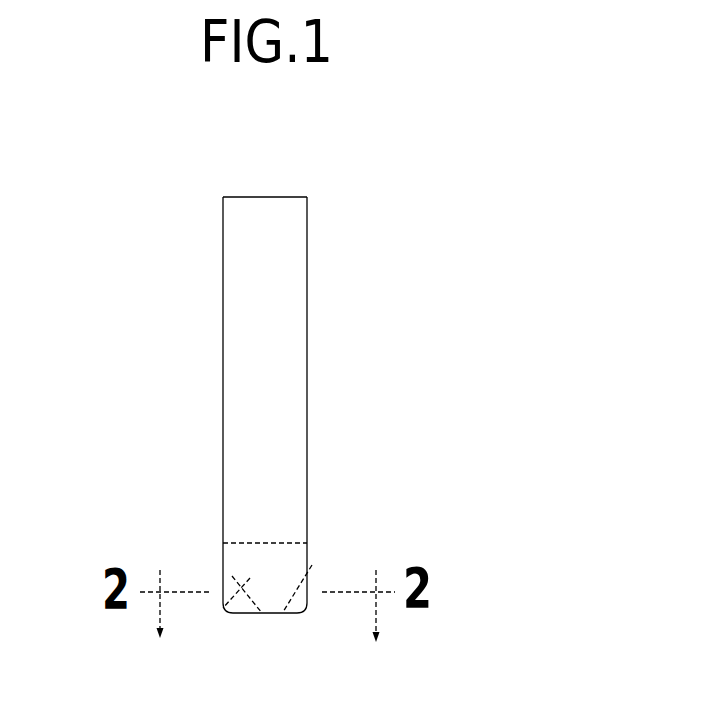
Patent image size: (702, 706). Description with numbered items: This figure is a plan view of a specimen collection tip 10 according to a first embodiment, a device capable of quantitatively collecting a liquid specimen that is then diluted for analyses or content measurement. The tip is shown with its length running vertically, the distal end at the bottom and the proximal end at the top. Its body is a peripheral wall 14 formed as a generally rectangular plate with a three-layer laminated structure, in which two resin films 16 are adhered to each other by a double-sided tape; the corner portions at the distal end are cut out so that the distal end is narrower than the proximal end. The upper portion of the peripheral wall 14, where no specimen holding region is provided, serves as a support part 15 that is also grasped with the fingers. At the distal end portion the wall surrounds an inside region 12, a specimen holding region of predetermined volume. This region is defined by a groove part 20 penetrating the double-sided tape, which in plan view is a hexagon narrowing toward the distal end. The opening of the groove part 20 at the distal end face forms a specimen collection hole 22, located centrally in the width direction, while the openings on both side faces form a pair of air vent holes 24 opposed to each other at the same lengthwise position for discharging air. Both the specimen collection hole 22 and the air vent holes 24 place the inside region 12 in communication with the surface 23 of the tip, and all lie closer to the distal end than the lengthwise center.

The specimen collection tip 10 is at (372, 152).
The inside region 12 is at (295, 602).
The peripheral wall 14 is at (201, 359).
The support part 15 is at (319, 258).
The resin film 16 is at (245, 445).
The groove part 20 is at (223, 608).
The specimen collection hole 22 is at (262, 614).
The surface 23 is at (416, 407).
The air vent hole 24 is at (220, 551).